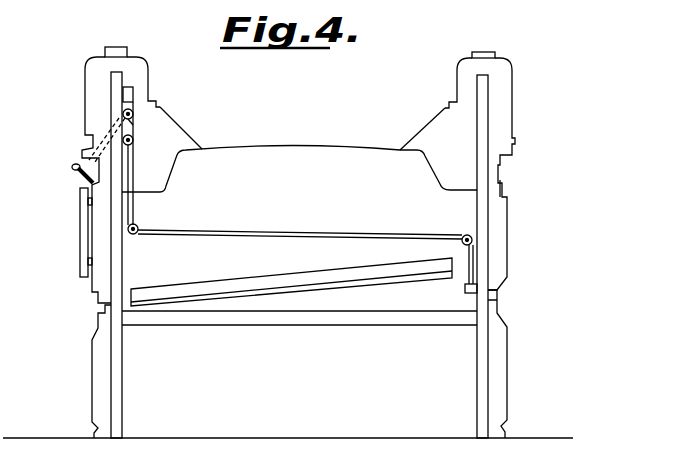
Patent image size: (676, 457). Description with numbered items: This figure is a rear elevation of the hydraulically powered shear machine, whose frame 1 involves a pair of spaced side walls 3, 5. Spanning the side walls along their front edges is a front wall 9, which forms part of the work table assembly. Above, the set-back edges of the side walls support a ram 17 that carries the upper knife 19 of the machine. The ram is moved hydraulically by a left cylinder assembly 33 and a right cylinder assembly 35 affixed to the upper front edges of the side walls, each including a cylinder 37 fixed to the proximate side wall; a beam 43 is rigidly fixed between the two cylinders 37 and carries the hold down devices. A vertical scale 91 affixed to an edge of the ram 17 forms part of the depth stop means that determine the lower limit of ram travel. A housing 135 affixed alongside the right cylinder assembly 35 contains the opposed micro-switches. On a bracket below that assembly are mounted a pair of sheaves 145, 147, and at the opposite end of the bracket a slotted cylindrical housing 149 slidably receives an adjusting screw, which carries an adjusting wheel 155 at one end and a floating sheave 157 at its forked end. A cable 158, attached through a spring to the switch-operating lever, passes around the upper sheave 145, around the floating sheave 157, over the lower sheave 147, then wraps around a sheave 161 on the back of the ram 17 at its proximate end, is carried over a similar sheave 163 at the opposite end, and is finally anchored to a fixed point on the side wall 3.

The frame 1 is at (524, 245).
The side wall 3 is at (477, 363).
The side wall 5 is at (122, 365).
The front wall 9 is at (97, 381).
The ram 17 is at (265, 155).
The upper knife 19 is at (402, 276).
The left cylinder assembly 33 is at (545, 76).
The right cylinder assembly 35 is at (72, 66).
The cylinder 37 is at (86, 96).
The beam 43 is at (176, 128).
The vertical scale 91 is at (82, 229).
The housing 135 is at (134, 92).
The sheave 145 is at (133, 115).
The sheave 147 is at (133, 141).
The cylindrical housing 149 is at (88, 166).
The adjusting wheel 155 is at (72, 172).
The floating sheave 157 is at (135, 153).
The cable 158 is at (273, 232).
The sheave 161 is at (137, 227).
The sheave 163 is at (463, 241).